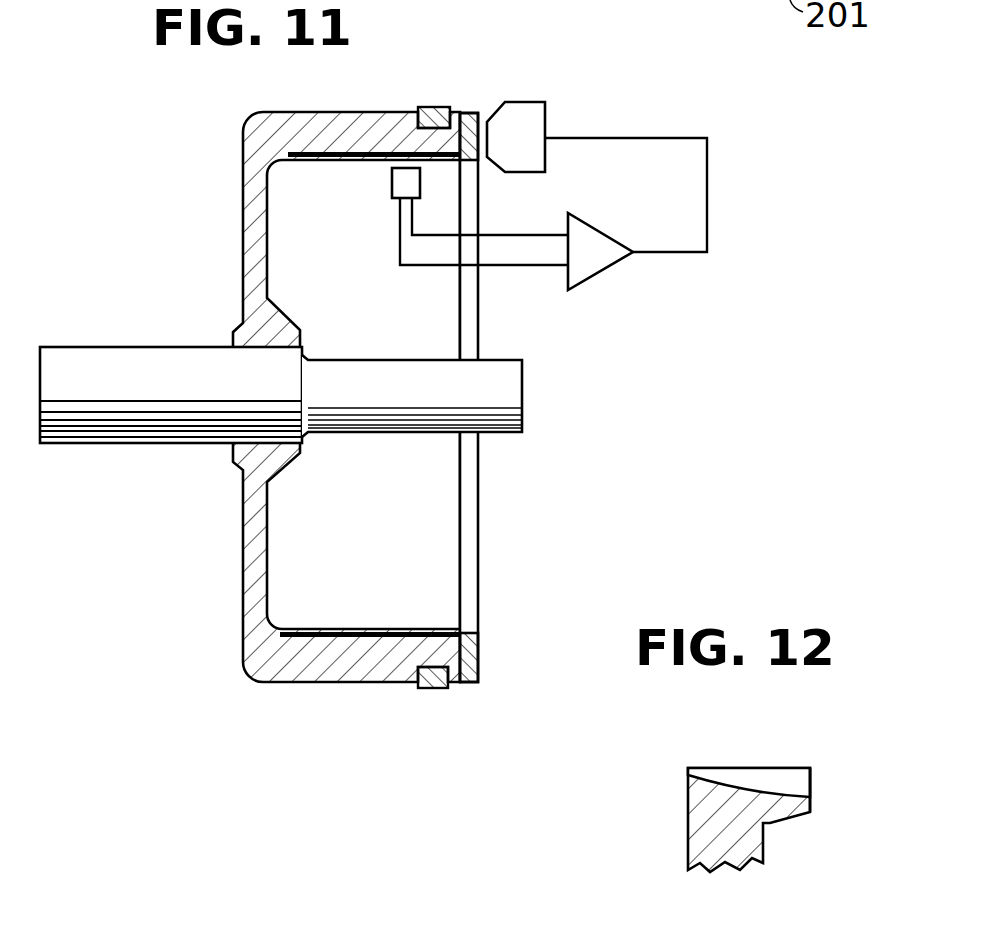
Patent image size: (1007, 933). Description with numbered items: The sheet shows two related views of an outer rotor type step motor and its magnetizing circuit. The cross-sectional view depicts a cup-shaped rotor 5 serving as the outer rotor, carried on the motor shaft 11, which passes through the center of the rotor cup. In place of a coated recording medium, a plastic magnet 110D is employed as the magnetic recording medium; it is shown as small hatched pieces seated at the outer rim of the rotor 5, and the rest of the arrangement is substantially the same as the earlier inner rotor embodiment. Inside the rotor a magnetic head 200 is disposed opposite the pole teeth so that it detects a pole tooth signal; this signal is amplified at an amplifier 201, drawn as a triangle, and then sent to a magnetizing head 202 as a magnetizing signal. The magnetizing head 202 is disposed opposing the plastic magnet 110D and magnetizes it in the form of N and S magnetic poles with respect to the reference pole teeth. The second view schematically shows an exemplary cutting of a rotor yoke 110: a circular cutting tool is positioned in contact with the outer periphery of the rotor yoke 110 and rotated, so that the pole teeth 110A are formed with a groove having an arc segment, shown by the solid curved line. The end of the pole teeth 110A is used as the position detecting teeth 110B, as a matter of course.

In FIG. 11, the rotor 5 is at (360, 112).
In FIG. 11, the shaft 11 is at (155, 428).
In FIG. 11, the plastic magnet 110D is at (433, 107).
In FIG. 11, the magnetic head 200 is at (392, 185).
In FIG. 11, the amplifier 201 is at (600, 273).
In FIG. 11, the magnetizing head 202 is at (537, 110).
In FIG. 12, the rotor yoke 110 is at (755, 786).
In FIG. 12, the pole teeth 110A is at (747, 768).
In FIG. 12, the position detecting teeth 110B is at (810, 783).